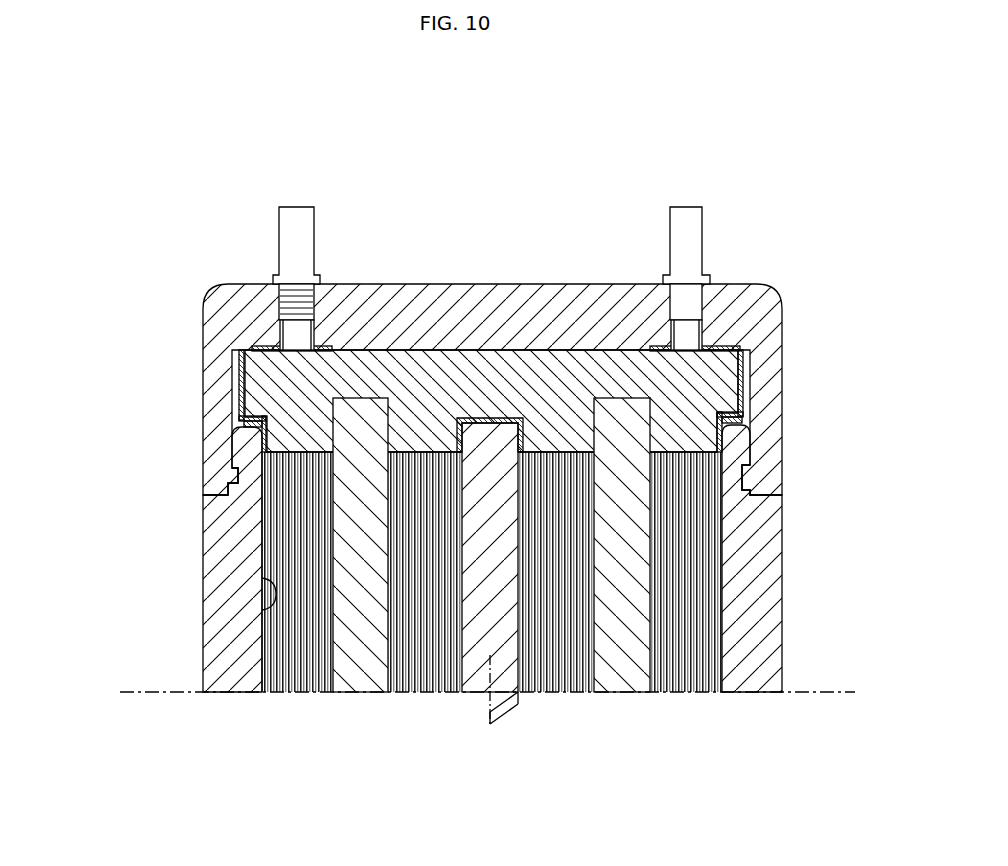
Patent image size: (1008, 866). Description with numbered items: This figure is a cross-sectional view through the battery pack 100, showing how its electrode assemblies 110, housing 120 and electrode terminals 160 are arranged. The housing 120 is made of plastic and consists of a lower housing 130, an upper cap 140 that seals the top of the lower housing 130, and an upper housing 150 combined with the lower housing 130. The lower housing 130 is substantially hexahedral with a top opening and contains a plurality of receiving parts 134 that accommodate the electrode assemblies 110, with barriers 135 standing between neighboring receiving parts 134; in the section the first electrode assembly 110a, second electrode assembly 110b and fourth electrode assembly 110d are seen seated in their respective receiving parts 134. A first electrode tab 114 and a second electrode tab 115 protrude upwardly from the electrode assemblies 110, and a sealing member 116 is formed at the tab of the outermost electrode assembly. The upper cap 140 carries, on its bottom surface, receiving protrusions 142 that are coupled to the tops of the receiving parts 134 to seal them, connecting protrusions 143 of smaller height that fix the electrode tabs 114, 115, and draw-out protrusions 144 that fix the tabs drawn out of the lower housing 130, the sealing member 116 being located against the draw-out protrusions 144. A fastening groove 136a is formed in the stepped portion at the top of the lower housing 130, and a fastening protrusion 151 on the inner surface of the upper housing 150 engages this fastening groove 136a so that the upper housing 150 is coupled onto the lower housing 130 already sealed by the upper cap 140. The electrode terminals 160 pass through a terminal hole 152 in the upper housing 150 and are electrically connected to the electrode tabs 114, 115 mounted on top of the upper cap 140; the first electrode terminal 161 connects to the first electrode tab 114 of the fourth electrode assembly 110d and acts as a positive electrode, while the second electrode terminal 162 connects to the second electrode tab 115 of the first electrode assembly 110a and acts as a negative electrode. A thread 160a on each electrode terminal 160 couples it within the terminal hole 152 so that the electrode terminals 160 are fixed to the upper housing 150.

The battery pack 100 is at (80, 120).
The electrode assemblies 110 is at (655, 780).
The first electrode assembly 110a is at (676, 680).
The second electrode assembly 110b is at (555, 680).
The fourth electrode assembly 110d is at (304, 680).
The first electrode tab 114 is at (258, 347).
The second electrode tab 115 is at (722, 336).
The sealing member 116 is at (736, 428).
The housing 120 is at (115, 323).
The lower housing 130 is at (222, 530).
The receiving parts 134 is at (262, 610).
The barriers 135 is at (357, 640).
The fastening groove 136a is at (258, 556).
The upper cap 140 is at (262, 383).
The receiving protrusions 142 is at (550, 448).
The connecting protrusions 143 is at (490, 416).
The draw-out protrusions 144 is at (730, 410).
The upper housing 150 is at (215, 326).
The fastening protrusion 151 is at (752, 478).
The terminal hole 152 is at (330, 346).
The electrode terminals 160 is at (662, 148).
The thread 160a is at (313, 310).
The first electrode terminal 161 is at (295, 212).
The second electrode terminal 162 is at (687, 212).